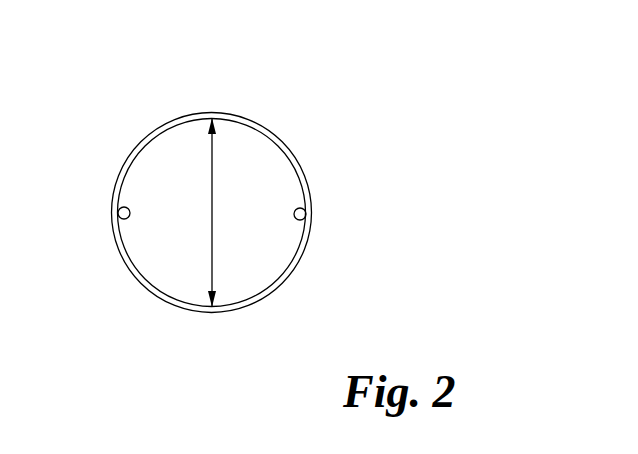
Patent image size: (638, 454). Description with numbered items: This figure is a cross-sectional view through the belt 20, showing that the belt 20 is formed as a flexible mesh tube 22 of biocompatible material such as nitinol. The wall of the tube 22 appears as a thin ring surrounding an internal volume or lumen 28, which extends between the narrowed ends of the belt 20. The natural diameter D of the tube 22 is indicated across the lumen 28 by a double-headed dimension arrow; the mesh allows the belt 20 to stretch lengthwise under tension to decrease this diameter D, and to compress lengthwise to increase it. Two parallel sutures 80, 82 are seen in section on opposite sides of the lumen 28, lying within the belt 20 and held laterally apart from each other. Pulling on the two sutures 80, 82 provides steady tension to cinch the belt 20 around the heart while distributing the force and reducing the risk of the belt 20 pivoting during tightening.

The belt 20 is at (295, 126).
The flexible mesh tube 22 is at (262, 123).
The lumen 28 is at (155, 245).
The suture 80 is at (118, 213).
The suture 82 is at (306, 214).
The diameter D is at (212, 263).